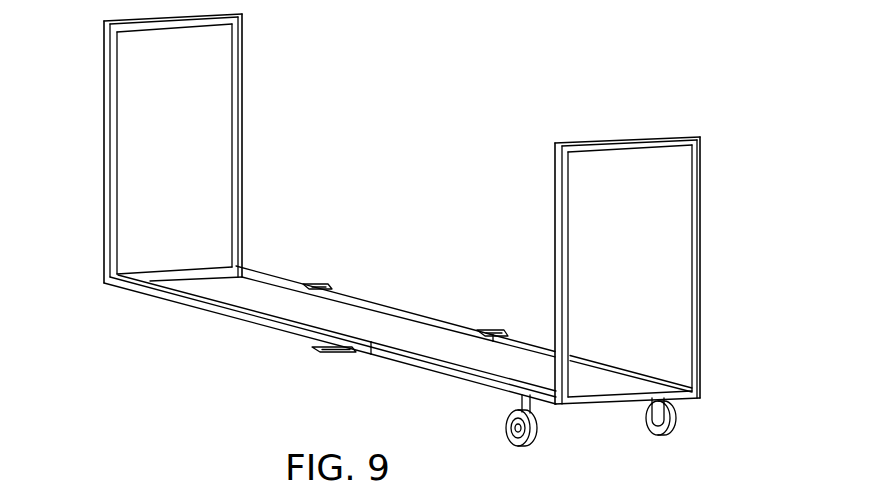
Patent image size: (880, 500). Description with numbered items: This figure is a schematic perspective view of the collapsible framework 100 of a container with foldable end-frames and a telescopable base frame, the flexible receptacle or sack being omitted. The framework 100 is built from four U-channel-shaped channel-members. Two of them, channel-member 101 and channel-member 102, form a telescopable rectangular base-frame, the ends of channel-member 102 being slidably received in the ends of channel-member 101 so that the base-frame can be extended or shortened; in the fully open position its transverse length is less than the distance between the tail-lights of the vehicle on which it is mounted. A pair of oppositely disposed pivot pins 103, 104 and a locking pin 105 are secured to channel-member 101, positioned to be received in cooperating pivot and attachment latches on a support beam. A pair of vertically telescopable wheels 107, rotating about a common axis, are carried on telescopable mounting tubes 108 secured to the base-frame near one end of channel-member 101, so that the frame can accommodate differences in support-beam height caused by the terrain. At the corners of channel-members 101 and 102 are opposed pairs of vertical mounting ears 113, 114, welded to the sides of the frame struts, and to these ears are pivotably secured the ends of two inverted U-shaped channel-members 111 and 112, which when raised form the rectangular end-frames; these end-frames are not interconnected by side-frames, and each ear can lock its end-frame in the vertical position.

The collapsible framework 100 is at (292, 211).
The channel-member 101 is at (203, 316).
The channel-member 102 is at (404, 364).
The pivot pin 103 is at (315, 354).
The pivot pin 104 is at (487, 327).
The locking pin 105 is at (322, 286).
The telescopable wheel 107 is at (673, 433).
The telescopable mounting tube 108 is at (516, 410).
The U-shaped channel-member 111 is at (242, 173).
The U-shaped channel-member 112 is at (702, 222).
The vertical mounting ear 113 is at (702, 372).
The vertical mounting ear 114 is at (105, 246).